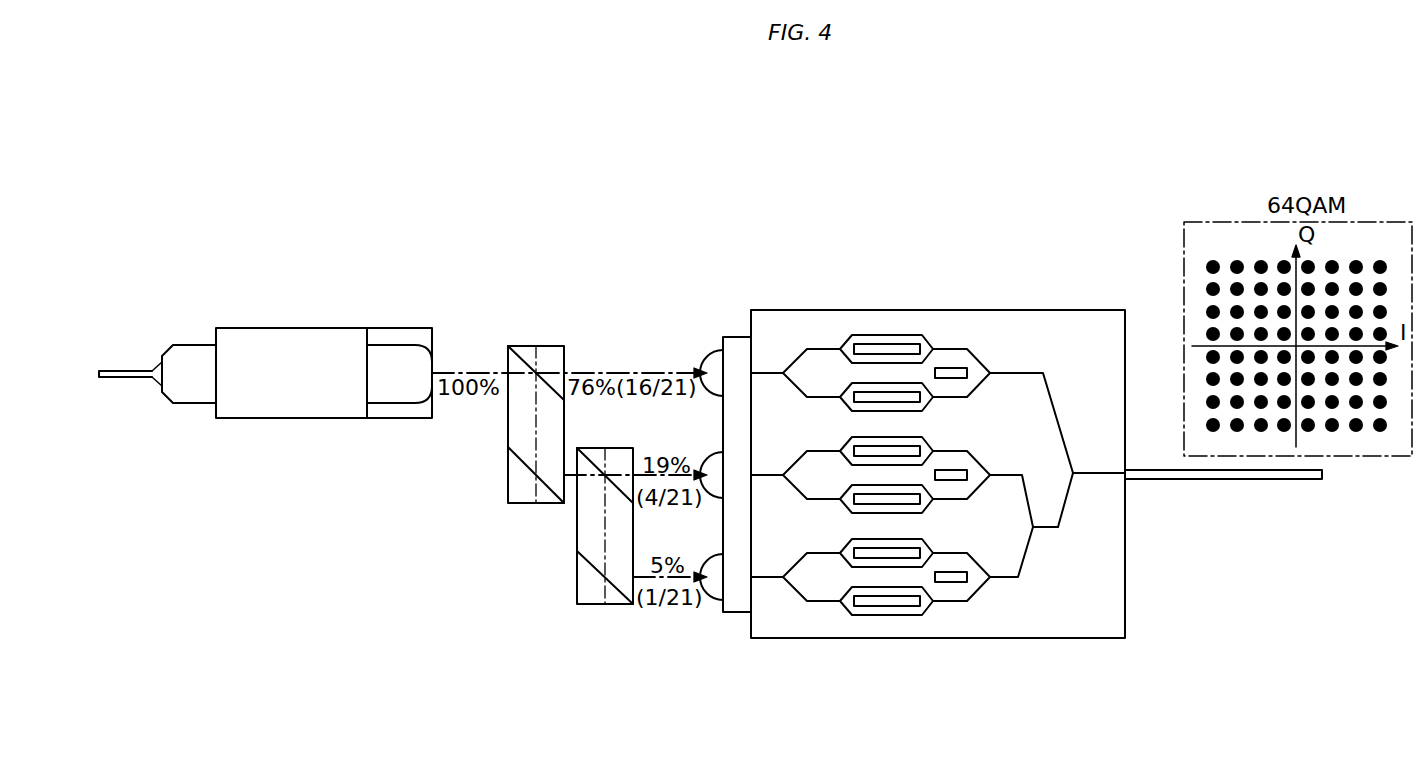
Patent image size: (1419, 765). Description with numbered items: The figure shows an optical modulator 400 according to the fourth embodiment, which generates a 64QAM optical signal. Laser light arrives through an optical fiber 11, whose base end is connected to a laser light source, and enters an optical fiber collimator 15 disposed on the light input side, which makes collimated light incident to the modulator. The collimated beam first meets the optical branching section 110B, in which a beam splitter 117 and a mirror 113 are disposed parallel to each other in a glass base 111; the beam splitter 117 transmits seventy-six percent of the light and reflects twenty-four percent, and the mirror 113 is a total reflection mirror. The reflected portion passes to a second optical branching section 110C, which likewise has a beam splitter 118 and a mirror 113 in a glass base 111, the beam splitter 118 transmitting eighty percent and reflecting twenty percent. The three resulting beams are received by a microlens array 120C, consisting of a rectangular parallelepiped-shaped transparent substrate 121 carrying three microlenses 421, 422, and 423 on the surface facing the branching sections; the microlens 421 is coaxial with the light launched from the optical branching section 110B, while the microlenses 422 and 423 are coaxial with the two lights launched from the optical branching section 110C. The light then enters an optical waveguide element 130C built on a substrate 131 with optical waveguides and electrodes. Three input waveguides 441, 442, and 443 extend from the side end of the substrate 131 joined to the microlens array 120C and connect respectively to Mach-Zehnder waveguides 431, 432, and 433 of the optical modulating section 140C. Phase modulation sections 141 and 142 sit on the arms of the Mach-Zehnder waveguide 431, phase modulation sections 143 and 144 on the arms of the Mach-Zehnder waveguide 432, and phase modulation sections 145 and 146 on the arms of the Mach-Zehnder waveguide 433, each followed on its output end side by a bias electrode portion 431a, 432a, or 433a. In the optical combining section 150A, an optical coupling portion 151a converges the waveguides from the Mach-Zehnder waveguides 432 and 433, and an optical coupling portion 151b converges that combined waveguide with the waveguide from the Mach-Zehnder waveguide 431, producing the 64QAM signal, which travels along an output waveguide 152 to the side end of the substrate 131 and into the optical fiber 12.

The optical fiber 11 is at (118, 372).
The optical fiber 12 is at (1256, 481).
The optical fiber collimator 15 is at (297, 322).
The optical branching section 110B is at (560, 393).
The optical branching section 110C is at (585, 559).
The glass base 111 is at (519, 504).
The mirror 113 is at (520, 462).
The beam splitter 117 is at (518, 352).
The beam splitter 118 is at (594, 458).
The microlens array 120C is at (717, 404).
The transparent substrate 121 is at (733, 614).
The microlens 421 is at (706, 352).
The microlens 422 is at (715, 491).
The microlens 423 is at (713, 586).
The optical waveguide element 130C is at (951, 416).
The substrate 131 is at (1075, 640).
The optical modulating section 140C is at (891, 436).
The phase modulation section 141 is at (908, 337).
The phase modulation section 142 is at (877, 391).
The phase modulation section 143 is at (922, 441).
The phase modulation section 144 is at (922, 509).
The phase modulation section 145 is at (900, 558).
The phase modulation section 146 is at (888, 617).
The Mach-Zehnder waveguide 431 is at (891, 300).
The Mach-Zehnder waveguide 432 is at (906, 362).
The Mach-Zehnder waveguide 433 is at (900, 454).
The bias electrode portion 431a is at (949, 367).
The bias electrode portion 432a is at (958, 470).
The bias electrode portion 433a is at (955, 594).
The input waveguide 441 is at (747, 336).
The input waveguide 442 is at (766, 472).
The input waveguide 443 is at (769, 579).
The optical combining section 150A is at (1085, 367).
The optical coupling portion 151a is at (1095, 545).
The optical coupling portion 151b is at (1068, 557).
The output waveguide 152 is at (1126, 332).
The optical modulator 400 is at (610, 118).